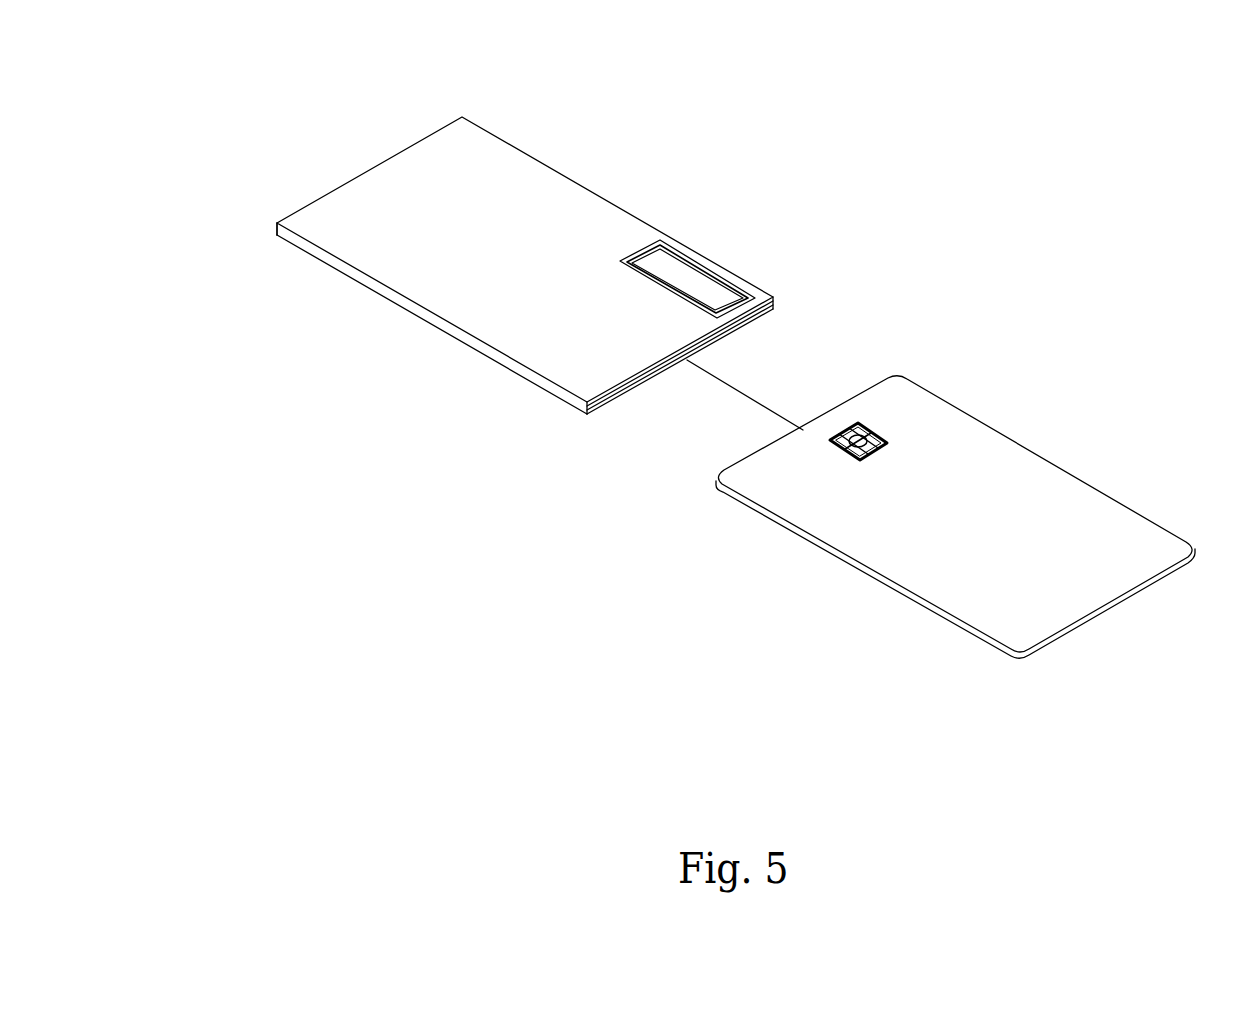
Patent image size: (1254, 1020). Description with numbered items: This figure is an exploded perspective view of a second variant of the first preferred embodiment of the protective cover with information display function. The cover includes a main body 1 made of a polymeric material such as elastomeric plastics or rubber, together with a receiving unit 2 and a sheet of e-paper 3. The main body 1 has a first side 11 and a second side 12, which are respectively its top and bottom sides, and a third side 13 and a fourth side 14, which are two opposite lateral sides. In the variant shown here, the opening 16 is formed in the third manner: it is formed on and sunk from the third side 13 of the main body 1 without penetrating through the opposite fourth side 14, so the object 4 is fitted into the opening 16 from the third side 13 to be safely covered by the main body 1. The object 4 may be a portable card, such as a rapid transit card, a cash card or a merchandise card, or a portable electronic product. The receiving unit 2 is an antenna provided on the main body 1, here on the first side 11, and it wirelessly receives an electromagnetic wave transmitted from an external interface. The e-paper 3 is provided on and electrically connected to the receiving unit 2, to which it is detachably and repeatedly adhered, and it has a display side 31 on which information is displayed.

The main body 1 is at (541, 294).
The first side 11 is at (470, 138).
The second side 12 is at (422, 323).
The third side 13 is at (590, 413).
The fourth side 14 is at (277, 227).
The opening 16 is at (777, 307).
The receiving unit 2 is at (659, 240).
The e-paper 3 is at (718, 238).
The display side 31 is at (728, 295).
The object 4 is at (1043, 480).